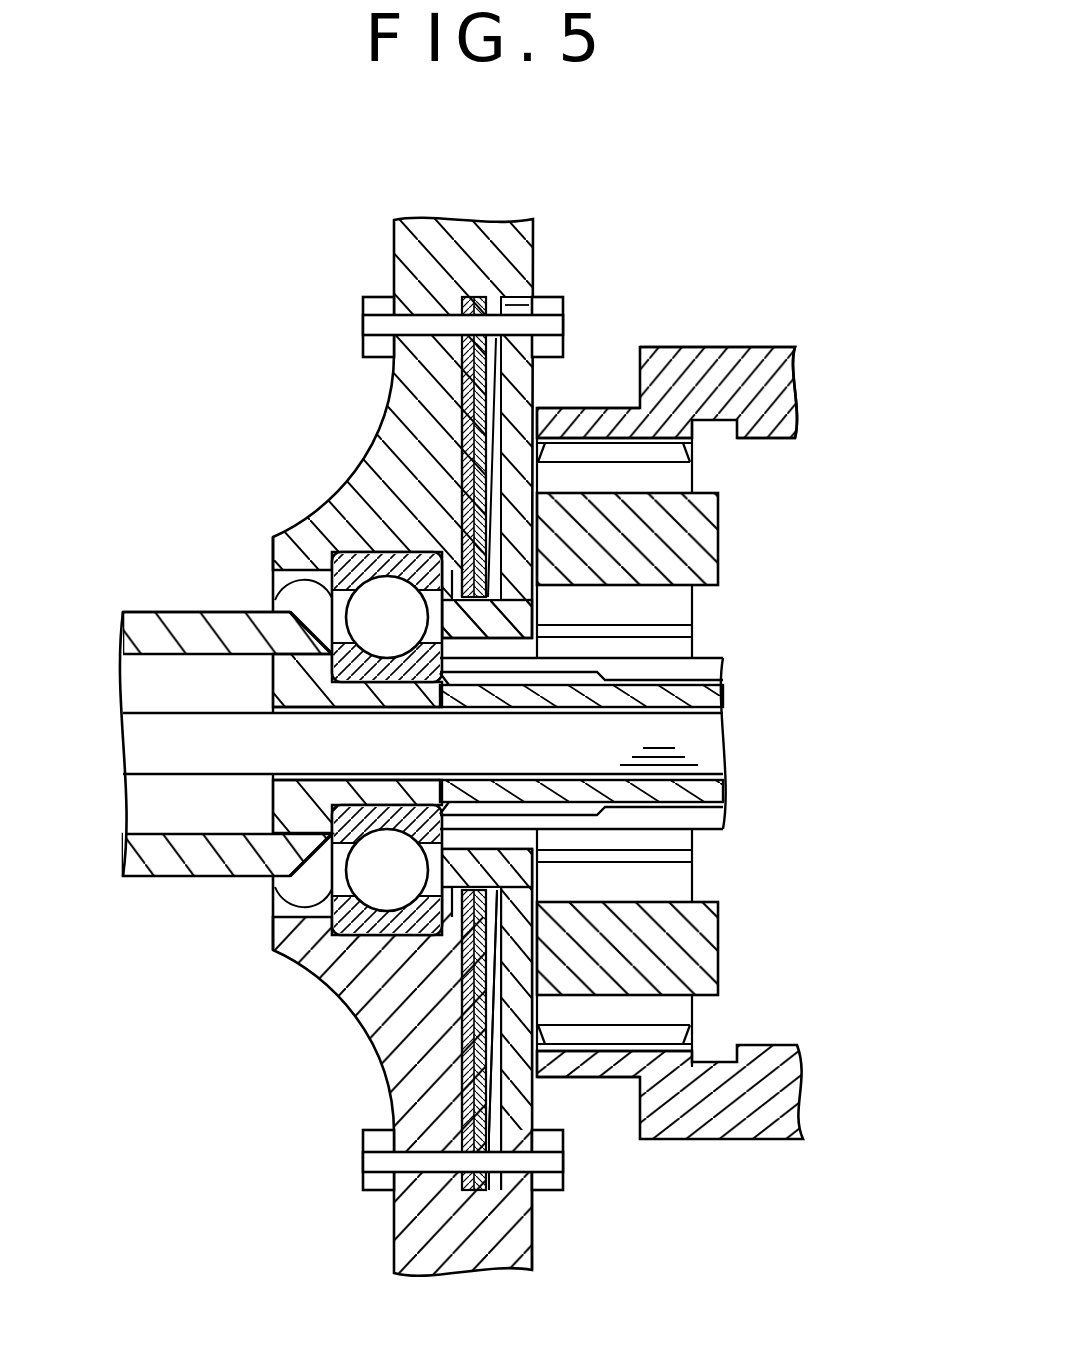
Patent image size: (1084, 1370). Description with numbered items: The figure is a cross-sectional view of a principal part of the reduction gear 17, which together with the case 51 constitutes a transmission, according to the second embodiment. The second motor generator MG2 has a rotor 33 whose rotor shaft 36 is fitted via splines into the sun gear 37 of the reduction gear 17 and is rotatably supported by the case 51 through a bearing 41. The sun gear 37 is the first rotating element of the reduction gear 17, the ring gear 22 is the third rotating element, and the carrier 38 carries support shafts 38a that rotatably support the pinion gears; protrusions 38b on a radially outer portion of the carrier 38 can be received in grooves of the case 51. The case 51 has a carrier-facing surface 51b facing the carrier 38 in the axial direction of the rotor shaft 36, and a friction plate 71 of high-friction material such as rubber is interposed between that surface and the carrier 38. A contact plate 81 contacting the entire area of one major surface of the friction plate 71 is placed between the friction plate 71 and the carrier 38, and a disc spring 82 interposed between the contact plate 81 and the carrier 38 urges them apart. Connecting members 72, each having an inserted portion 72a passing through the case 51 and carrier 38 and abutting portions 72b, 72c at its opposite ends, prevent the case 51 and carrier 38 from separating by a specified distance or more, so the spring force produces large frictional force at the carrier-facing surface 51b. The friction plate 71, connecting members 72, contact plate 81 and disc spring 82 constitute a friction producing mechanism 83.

The reduction gear 17 is at (820, 438).
The ring gear 22 is at (793, 358).
The rotor 33 is at (178, 611).
The rotor shaft 36 is at (726, 698).
The sun gear 37 is at (680, 647).
The carrier 38 is at (560, 393).
The support shaft 38a is at (720, 540).
The protrusion 38b is at (513, 296).
The bearing 41 is at (276, 583).
The case 51 is at (347, 448).
The carrier-facing surface 51b is at (492, 1093).
The friction plate 71 is at (465, 1030).
The connecting member 72 is at (372, 1215).
The inserted portion 72a is at (445, 322).
The abutting portion 72b is at (547, 325).
The abutting portion 72c is at (375, 323).
The contact plate 81 is at (458, 387).
The disc spring 82 is at (495, 1140).
The friction producing mechanism 83 is at (447, 1083).
The second motor generator MG2 is at (147, 598).